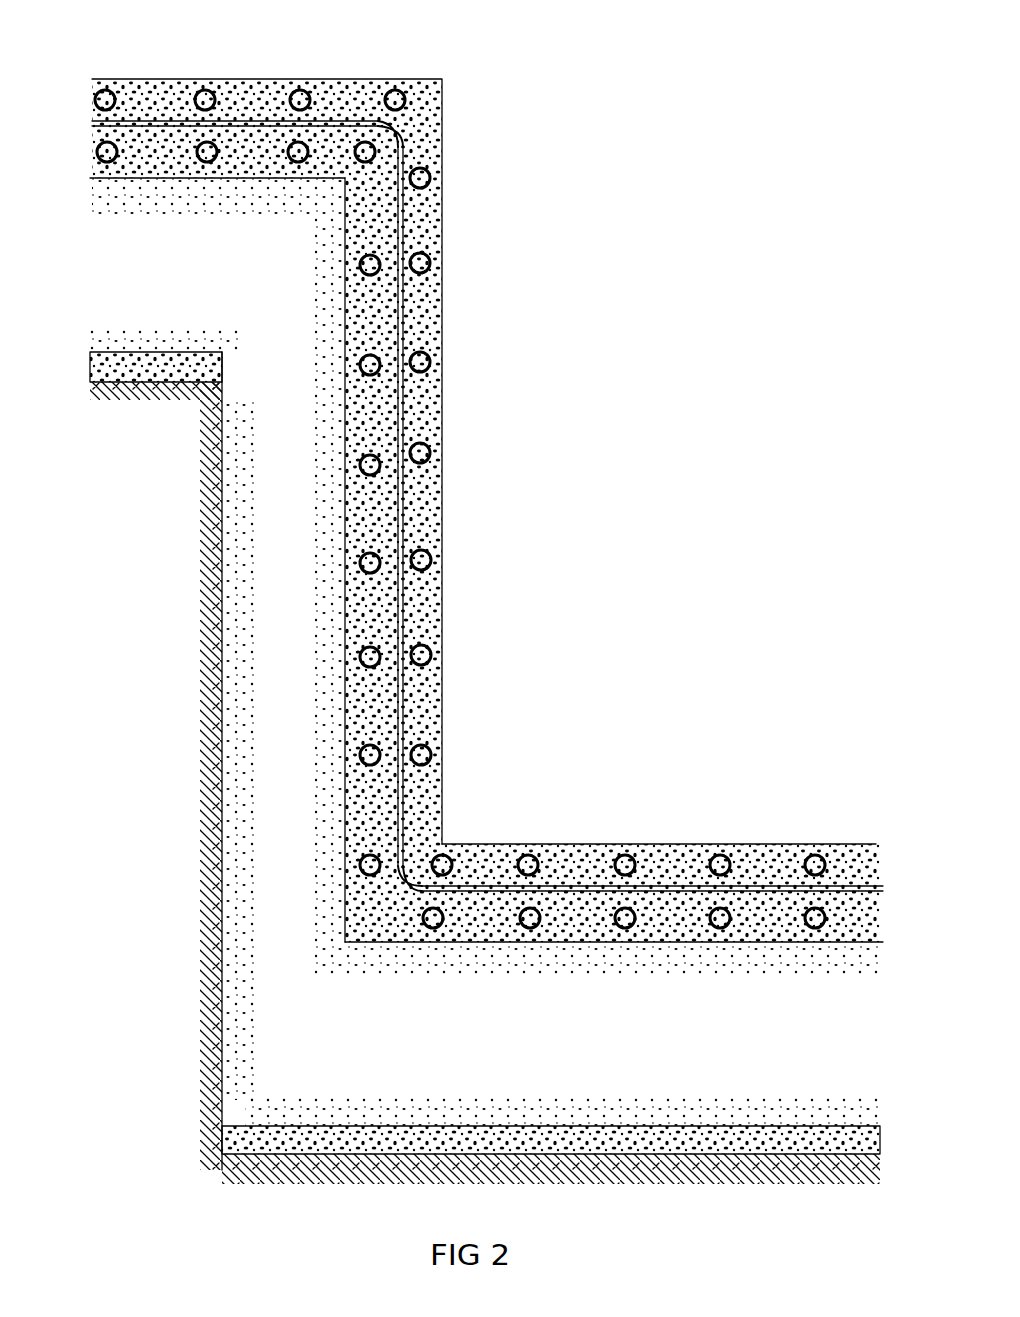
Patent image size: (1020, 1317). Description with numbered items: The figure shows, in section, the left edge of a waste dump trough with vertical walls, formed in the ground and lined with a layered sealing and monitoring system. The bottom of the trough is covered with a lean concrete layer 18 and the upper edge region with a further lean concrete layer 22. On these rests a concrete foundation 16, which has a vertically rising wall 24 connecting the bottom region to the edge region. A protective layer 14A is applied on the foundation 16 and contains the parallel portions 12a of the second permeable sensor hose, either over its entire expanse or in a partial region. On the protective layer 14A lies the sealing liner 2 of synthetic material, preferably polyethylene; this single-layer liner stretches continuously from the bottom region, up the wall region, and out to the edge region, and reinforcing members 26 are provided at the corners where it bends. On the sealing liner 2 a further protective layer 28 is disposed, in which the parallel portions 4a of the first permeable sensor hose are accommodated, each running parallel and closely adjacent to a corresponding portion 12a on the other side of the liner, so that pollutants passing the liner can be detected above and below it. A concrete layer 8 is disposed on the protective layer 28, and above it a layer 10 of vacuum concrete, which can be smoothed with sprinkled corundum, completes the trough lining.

The sealing liner 2 is at (400, 424).
The portions of the first sensor hose 4a is at (290, 85).
The concrete layer 8 is at (522, 673).
The layer of vacuum concrete 10 is at (740, 845).
The portions of the second sensor hose 12a is at (300, 152).
The protective layer 14A is at (355, 620).
The concrete foundation 16 is at (150, 266).
The lean concrete layer 18 is at (222, 1133).
The lean concrete layer 22 is at (115, 369).
The vertically rising wall 24 is at (222, 738).
The reinforcing members 26 is at (443, 118).
The further protective layer 28 is at (567, 870).